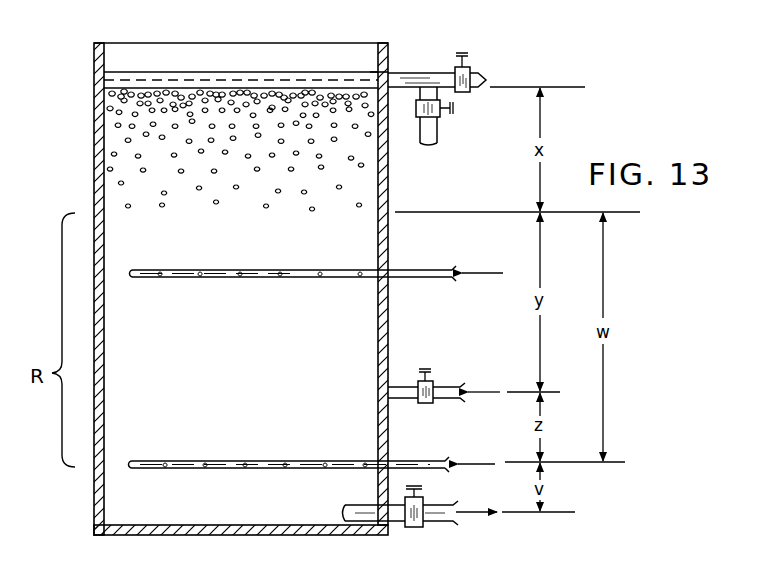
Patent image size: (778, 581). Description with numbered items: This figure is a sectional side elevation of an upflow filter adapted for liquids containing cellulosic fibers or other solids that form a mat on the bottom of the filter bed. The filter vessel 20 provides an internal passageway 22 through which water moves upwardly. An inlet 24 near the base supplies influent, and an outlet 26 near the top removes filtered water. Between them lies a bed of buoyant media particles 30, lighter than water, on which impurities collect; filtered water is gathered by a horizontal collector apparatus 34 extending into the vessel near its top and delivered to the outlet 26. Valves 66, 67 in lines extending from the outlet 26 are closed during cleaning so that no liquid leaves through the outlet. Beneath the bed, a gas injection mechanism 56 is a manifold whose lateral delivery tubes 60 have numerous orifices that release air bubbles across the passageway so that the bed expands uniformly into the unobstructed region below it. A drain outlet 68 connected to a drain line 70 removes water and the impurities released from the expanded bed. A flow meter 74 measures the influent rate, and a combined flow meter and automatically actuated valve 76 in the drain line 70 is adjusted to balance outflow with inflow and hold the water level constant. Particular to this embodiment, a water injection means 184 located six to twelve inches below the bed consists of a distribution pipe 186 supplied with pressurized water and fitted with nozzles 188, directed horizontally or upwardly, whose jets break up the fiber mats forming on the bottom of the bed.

The filter vessel 20 is at (389, 199).
The internal passageway 22 is at (365, 347).
The inlet 24 is at (402, 387).
The outlet 26 is at (378, 72).
The buoyant media particles 30 is at (128, 108).
The horizontal collector apparatus 34 is at (303, 72).
The gas injection mechanism 56 is at (218, 476).
The lateral delivery tubes 60 is at (273, 461).
The valve 66 is at (455, 70).
The valve 67 is at (455, 113).
The drain outlet 68 is at (346, 508).
The drain line 70 is at (438, 522).
The flow meter 74 is at (428, 403).
The combined flow meter and automatically actuated valve 76 is at (425, 498).
The water injection means 184 is at (348, 261).
The distribution pipe 186 is at (184, 278).
The nozzles 188 is at (266, 278).